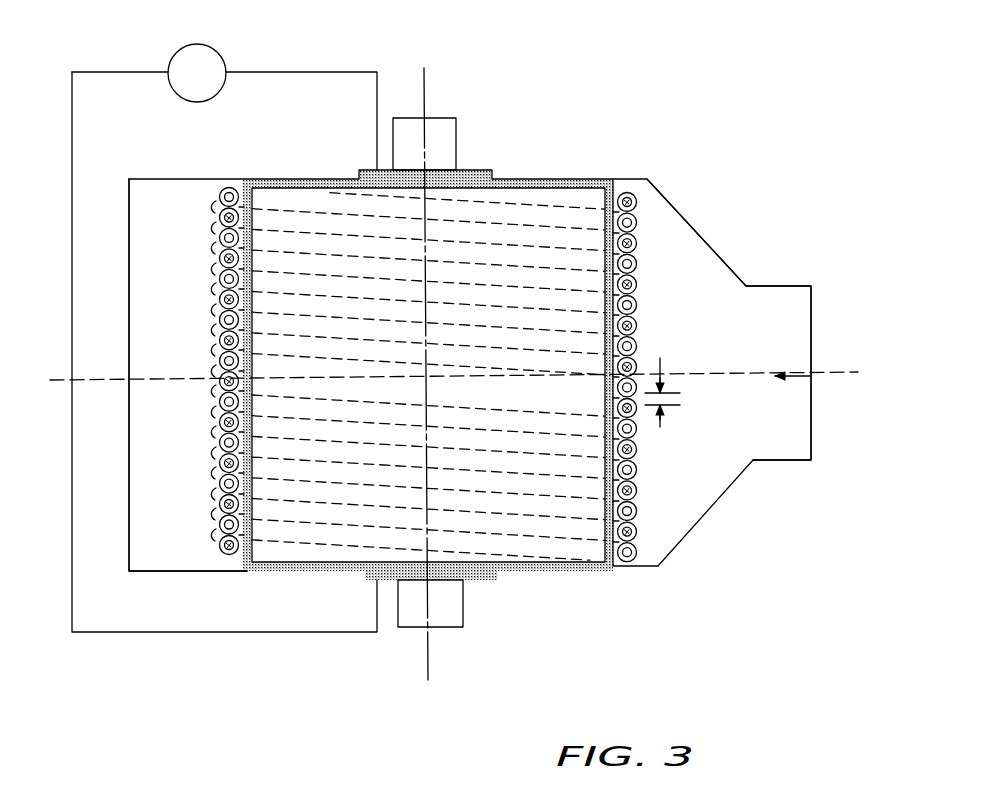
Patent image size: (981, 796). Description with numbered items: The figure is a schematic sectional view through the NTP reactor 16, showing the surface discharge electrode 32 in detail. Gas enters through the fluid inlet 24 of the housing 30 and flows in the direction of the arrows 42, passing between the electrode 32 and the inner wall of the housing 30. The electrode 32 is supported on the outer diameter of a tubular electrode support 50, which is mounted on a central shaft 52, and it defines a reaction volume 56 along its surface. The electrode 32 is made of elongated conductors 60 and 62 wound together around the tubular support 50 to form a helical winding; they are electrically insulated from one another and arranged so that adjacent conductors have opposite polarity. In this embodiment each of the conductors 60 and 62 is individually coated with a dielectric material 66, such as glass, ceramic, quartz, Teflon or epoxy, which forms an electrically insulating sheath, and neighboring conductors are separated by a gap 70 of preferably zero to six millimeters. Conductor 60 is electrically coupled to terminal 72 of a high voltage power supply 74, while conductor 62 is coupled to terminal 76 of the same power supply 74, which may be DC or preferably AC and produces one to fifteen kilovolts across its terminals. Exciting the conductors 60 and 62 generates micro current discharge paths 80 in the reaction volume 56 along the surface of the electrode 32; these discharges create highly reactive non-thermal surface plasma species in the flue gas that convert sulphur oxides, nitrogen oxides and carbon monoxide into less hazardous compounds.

The NTP reactor 16 is at (62, 167).
The fluid inlet 24 is at (811, 300).
The housing 30 is at (129, 405).
The surface discharge electrode 32 is at (199, 240).
The arrows 42 is at (790, 376).
The tubular electrode support 50 is at (256, 263).
The central shaft 52 is at (463, 598).
The reaction volume 56 is at (172, 342).
The elongated conductor 60 is at (637, 284).
The elongated conductor 62 is at (639, 379).
The dielectric material 66 is at (637, 511).
The gap 70 is at (660, 425).
The terminal 72 is at (285, 632).
The high voltage power supply 74 is at (218, 93).
The terminal 76 is at (292, 72).
The micro current discharge paths 80 is at (208, 398).